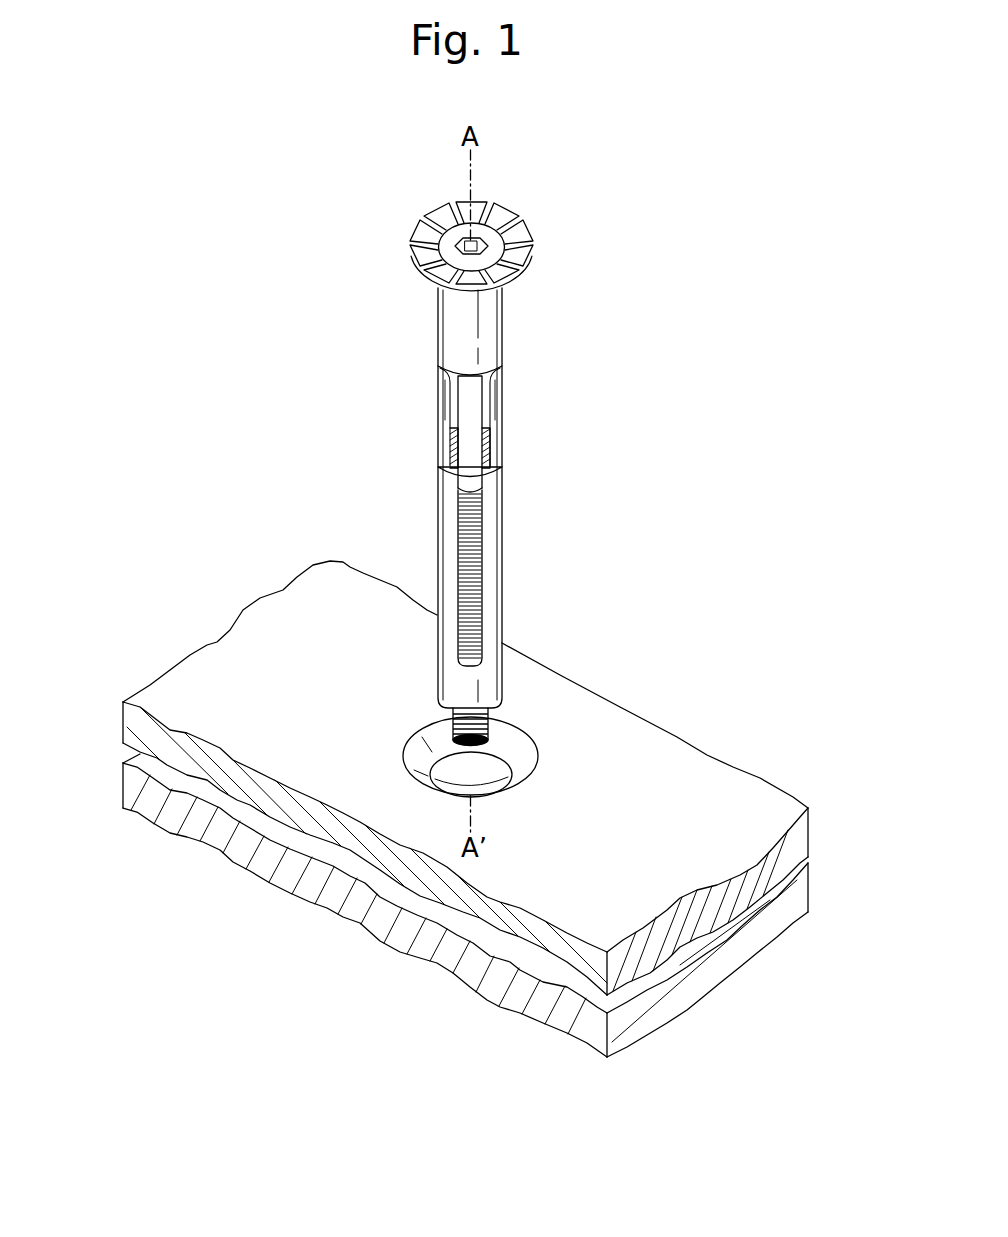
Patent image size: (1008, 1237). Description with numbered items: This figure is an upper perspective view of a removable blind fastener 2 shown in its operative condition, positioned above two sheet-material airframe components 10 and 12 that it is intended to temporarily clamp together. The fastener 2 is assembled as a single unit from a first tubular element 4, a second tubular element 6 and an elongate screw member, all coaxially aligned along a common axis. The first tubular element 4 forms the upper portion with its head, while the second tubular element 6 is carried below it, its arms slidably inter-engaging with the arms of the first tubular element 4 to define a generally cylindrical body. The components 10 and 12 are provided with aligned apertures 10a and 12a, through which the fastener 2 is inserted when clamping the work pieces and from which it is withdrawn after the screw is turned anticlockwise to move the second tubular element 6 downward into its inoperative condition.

The removable blind fastener 2 is at (352, 381).
The first tubular element 4 is at (494, 316).
The second tubular element 6 is at (492, 558).
The airframe component 10 is at (132, 715).
The aperture 10a is at (505, 731).
The airframe component 12 is at (132, 791).
The aperture 12a is at (494, 786).